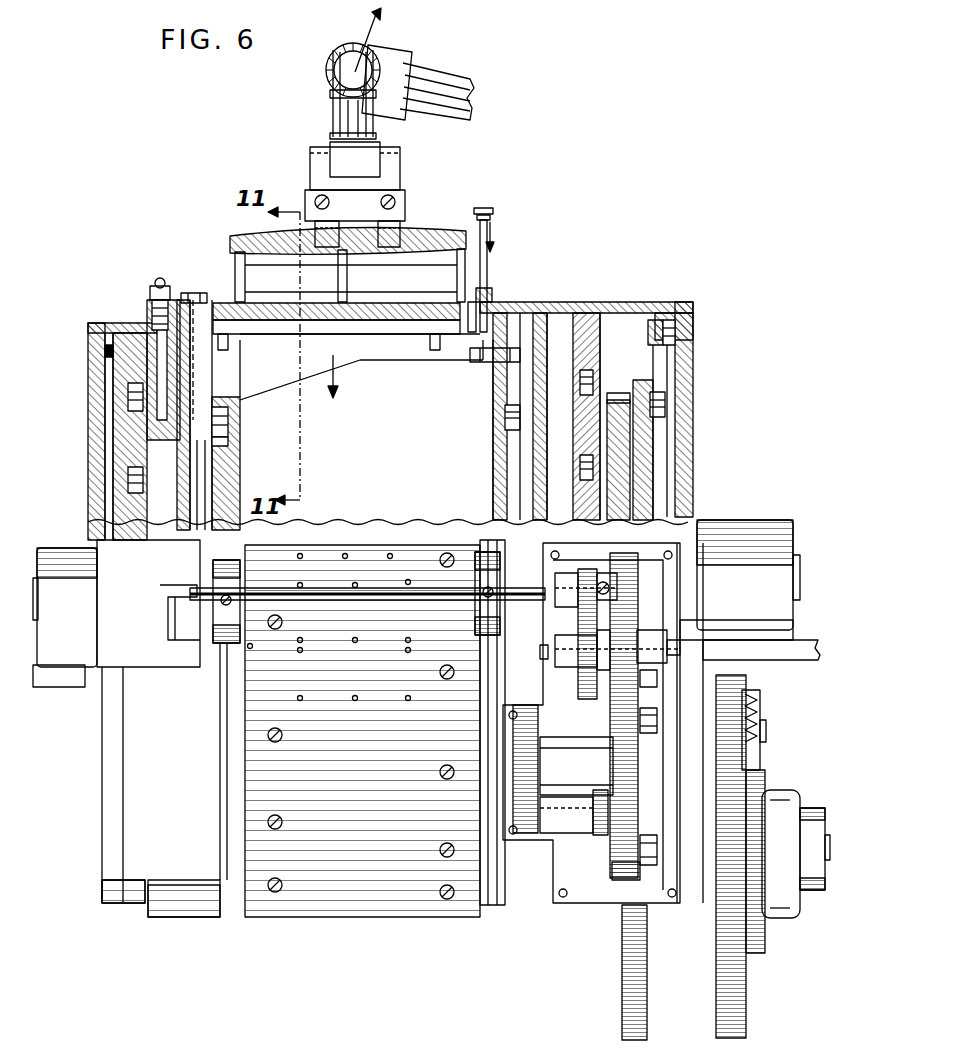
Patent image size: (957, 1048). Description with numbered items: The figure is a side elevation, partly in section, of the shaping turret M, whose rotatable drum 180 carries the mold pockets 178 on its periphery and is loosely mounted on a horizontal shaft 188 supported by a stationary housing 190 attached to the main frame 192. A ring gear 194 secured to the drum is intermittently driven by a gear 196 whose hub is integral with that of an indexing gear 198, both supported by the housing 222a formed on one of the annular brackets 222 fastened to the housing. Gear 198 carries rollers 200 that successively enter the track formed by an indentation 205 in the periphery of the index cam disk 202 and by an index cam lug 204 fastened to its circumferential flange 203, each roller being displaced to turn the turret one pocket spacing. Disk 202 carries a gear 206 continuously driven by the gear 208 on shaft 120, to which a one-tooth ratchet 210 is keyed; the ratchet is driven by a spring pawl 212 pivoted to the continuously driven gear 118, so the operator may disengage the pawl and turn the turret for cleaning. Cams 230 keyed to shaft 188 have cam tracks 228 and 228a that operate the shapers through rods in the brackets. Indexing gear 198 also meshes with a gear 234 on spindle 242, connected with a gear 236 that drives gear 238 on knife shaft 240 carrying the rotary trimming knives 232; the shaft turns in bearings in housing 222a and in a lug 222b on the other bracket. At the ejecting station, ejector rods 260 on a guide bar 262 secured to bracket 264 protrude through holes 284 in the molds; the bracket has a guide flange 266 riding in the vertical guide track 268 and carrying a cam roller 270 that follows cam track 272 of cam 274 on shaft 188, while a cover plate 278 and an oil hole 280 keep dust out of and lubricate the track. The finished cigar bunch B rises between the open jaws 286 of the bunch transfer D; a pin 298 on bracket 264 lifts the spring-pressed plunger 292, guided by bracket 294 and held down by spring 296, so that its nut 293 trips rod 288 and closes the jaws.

The continuously driven gear 118 is at (722, 1020).
The shaft 120 is at (518, 880).
The mold pockets 178 is at (232, 285).
The rotatable drum 180 is at (333, 303).
The horizontal shaft 188 is at (798, 560).
The stationary housing 190 is at (93, 400).
The main frame 192 is at (75, 678).
The ring gear 194 is at (500, 330).
The gear 196 is at (533, 765).
The indexing gear 198 is at (622, 875).
The rollers 200 is at (651, 734).
The index cam disk 202 is at (640, 404).
The circumferential flange 203 is at (660, 360).
The index cam lug 204 is at (660, 318).
The indentation 205 is at (650, 372).
The gear 206 is at (616, 394).
The gear 208 is at (628, 1022).
The one-tooth ratchet 210 is at (757, 952).
The spring pawl 212 is at (752, 760).
The annular brackets 222 is at (140, 305).
The housing 222a is at (548, 607).
The lug 222b is at (156, 660).
The cam track 228 is at (130, 395).
The cam tracks 228a is at (130, 480).
The cams 230 is at (140, 320).
The rotary trimming knives 232 is at (218, 556).
The gear 234 is at (641, 620).
The gear 236 is at (585, 690).
The gear 238 is at (586, 575).
The knife shaft 240 is at (521, 586).
The spindle 242 is at (540, 652).
The ejector rods 260 is at (392, 287).
The guide bar 262 is at (315, 384).
The bracket 264 is at (415, 360).
The guide flange 266 is at (205, 392).
The vertical guide track 268 is at (206, 461).
The cam roller 270 is at (229, 420).
The cam track 272 is at (229, 443).
The cam 274 is at (238, 482).
The cover plate 278 is at (205, 300).
The oil hole 280 is at (108, 351).
The holes 284 is at (300, 652).
The jaws 286 is at (405, 200).
The rod 288 is at (490, 210).
The spring-pressed plunger 292 is at (488, 240).
The nut 293 is at (491, 215).
The bracket 294 is at (495, 305).
The spring 296 is at (491, 290).
The pin 298 is at (488, 362).
The cigar bunch B is at (258, 232).
The bunch transfer D is at (450, 85).
The shaping turret M is at (355, 942).